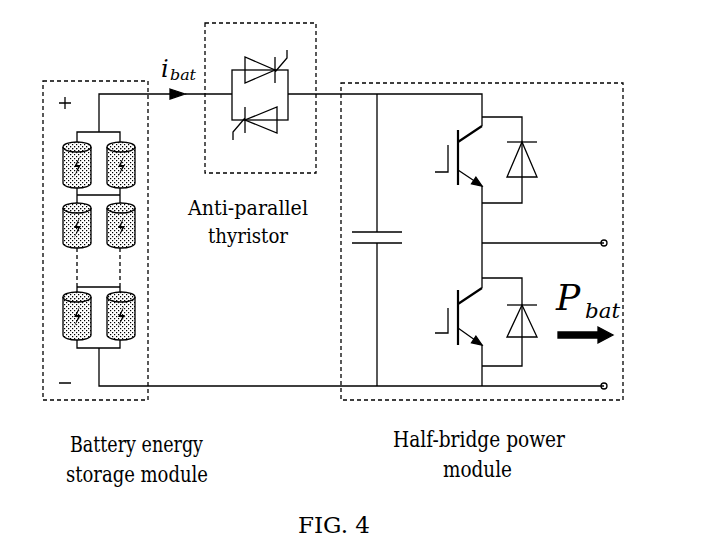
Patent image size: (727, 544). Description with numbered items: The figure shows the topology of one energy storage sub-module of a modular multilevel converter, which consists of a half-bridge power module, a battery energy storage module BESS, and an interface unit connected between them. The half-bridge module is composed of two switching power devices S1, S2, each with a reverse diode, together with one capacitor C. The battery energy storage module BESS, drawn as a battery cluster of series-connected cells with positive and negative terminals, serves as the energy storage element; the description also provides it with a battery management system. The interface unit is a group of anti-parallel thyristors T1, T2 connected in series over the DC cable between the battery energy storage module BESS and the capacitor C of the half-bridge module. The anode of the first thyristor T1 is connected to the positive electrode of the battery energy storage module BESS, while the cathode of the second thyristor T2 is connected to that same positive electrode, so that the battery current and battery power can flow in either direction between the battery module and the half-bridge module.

The first thyristor T1 is at (266, 55).
The second thyristor T2 is at (255, 139).
The switching power device S1 is at (472, 202).
The switching power device S2 is at (472, 332).
The capacitor C is at (389, 240).
The battery energy storage module BESS is at (333, 239).